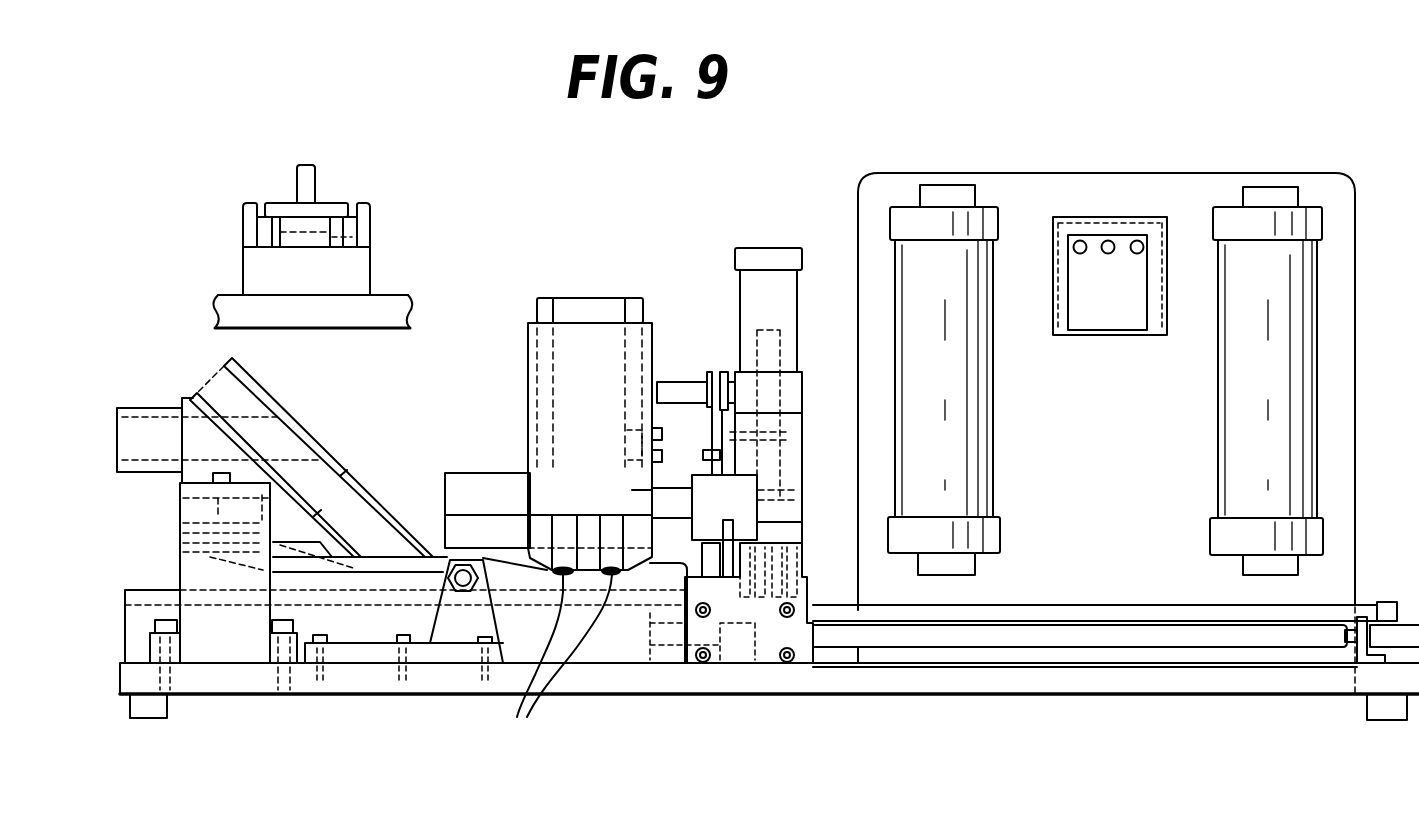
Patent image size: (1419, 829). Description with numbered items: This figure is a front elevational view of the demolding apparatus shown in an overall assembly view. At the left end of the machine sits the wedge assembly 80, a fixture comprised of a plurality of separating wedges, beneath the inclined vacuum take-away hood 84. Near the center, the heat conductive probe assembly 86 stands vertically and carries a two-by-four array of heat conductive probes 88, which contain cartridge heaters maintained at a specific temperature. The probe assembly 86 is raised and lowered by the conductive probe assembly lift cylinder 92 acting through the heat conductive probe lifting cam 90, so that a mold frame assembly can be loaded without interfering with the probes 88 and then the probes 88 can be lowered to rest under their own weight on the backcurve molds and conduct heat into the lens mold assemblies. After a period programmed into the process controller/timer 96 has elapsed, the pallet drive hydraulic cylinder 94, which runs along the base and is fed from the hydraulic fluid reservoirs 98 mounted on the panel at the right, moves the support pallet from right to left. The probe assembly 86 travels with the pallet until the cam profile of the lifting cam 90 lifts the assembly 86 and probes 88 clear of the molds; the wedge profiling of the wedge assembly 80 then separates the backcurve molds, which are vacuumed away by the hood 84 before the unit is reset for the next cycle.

The wedge assembly 80 is at (307, 550).
The vacuum take-away hood 84 is at (326, 452).
The heat conductive probe assembly 86 is at (668, 356).
The heat conductive probes 88 is at (560, 661).
The heat conductive probe lifting cam 90 is at (447, 483).
The conductive probe assembly lift cylinder 92 is at (765, 415).
The pallet drive hydraulic cylinder 94 is at (1060, 638).
The process controller/timer 96 is at (1100, 217).
The hydraulic fluid reservoirs 98 is at (1220, 373).